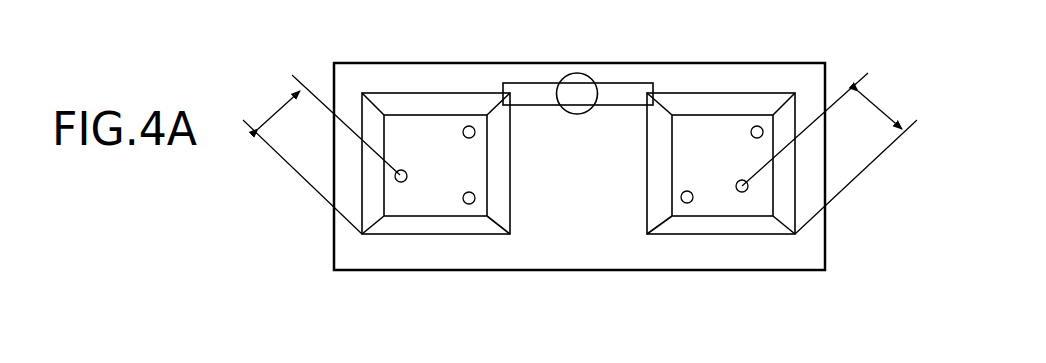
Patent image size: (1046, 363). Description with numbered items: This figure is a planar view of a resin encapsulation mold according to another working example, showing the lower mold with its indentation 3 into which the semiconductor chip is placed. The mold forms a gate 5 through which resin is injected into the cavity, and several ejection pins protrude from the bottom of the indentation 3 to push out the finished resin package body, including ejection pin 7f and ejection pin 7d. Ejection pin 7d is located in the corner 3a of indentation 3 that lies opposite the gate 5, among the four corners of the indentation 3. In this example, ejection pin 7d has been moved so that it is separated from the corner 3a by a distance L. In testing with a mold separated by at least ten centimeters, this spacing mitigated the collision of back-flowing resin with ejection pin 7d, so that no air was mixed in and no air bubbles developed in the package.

The indentation 3 is at (428, 128).
The corner 3a is at (362, 234).
The gate 5 is at (506, 93).
The ejection pin 7d is at (401, 176).
The ejection pin 7f is at (469, 198).
The distance L is at (580, 153).